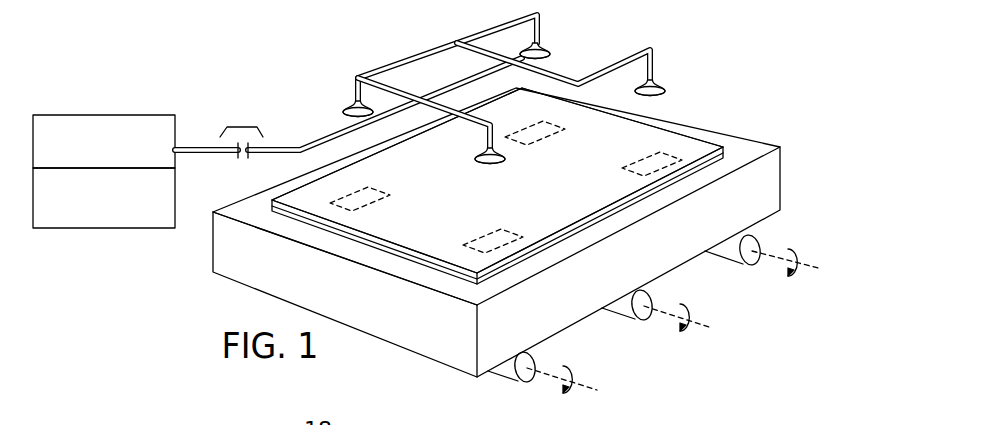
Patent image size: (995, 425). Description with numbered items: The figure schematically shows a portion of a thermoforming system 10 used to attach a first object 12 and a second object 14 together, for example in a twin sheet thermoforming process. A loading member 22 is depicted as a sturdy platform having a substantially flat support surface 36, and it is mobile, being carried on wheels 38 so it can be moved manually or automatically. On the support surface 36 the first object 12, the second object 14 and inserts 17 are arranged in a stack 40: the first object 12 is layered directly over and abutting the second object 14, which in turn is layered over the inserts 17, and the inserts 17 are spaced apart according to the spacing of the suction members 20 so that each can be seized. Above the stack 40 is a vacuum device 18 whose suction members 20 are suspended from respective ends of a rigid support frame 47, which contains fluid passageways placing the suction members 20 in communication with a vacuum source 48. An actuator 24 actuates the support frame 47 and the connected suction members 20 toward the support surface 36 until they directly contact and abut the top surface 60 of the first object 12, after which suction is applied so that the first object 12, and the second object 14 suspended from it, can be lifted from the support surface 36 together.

The thermoforming system 10 is at (751, 54).
The first object 12 is at (742, 142).
The second object 14 is at (714, 169).
The inserts 17 is at (660, 155).
The vacuum device 18 is at (69, 112).
The suction members 20 is at (547, 52).
The loading member 22 is at (236, 251).
The actuator 24 is at (63, 228).
The support surface 36 is at (343, 253).
The wheels 38 is at (535, 358).
The stack 40 is at (643, 131).
The support frame 47 is at (555, 72).
The vacuum source 48 is at (128, 124).
The top surface 60 is at (556, 204).